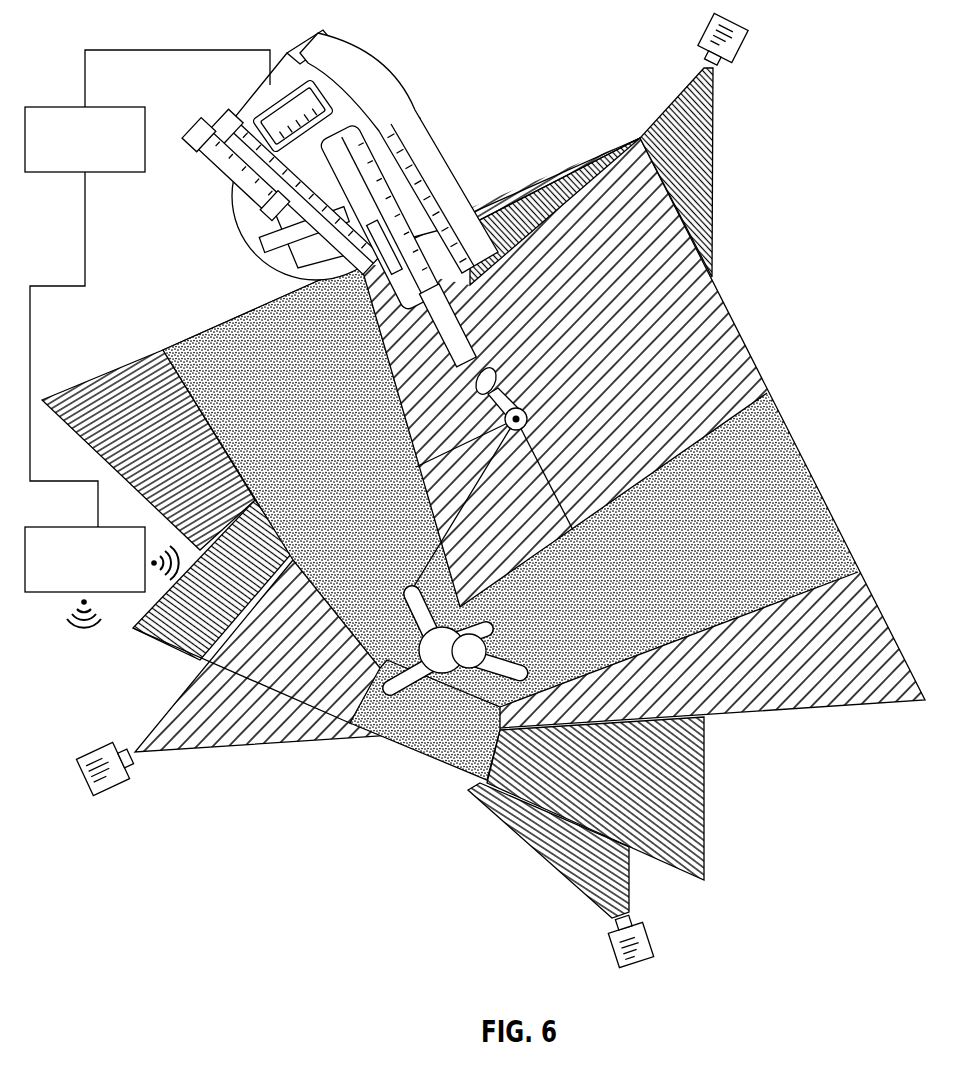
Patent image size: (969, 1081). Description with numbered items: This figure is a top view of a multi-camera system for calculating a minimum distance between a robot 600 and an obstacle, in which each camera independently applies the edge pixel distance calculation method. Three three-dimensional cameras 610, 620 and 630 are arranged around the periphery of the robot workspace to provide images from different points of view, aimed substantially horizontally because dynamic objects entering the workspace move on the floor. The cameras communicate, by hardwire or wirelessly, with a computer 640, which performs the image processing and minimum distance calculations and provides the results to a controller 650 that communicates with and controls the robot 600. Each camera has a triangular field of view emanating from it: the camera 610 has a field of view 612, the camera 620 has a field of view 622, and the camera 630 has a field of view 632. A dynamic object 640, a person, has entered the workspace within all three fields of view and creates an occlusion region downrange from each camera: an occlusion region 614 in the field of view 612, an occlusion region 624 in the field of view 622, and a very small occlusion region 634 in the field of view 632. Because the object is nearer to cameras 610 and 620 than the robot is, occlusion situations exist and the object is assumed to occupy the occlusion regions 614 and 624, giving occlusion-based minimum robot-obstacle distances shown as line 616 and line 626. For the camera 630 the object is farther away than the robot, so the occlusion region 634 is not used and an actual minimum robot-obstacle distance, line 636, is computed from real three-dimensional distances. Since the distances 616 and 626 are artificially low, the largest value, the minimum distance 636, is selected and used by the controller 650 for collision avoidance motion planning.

The robot 600 is at (376, 55).
The camera 610 is at (86, 750).
The field of view 612 is at (862, 572).
The occlusion region 614 is at (834, 513).
The minimum robot-obstacle distance 616 is at (537, 456).
The camera 620 is at (650, 966).
The field of view 622 is at (155, 345).
The occlusion region 624 is at (246, 316).
The minimum robot-obstacle distance 626 is at (467, 440).
The camera 630 is at (742, 56).
The field of view 632 is at (713, 150).
The occlusion region 634 is at (367, 736).
The minimum robot-obstacle distance 636 is at (470, 498).
The computer 640 is at (84, 524).
The controller 650 is at (82, 104).